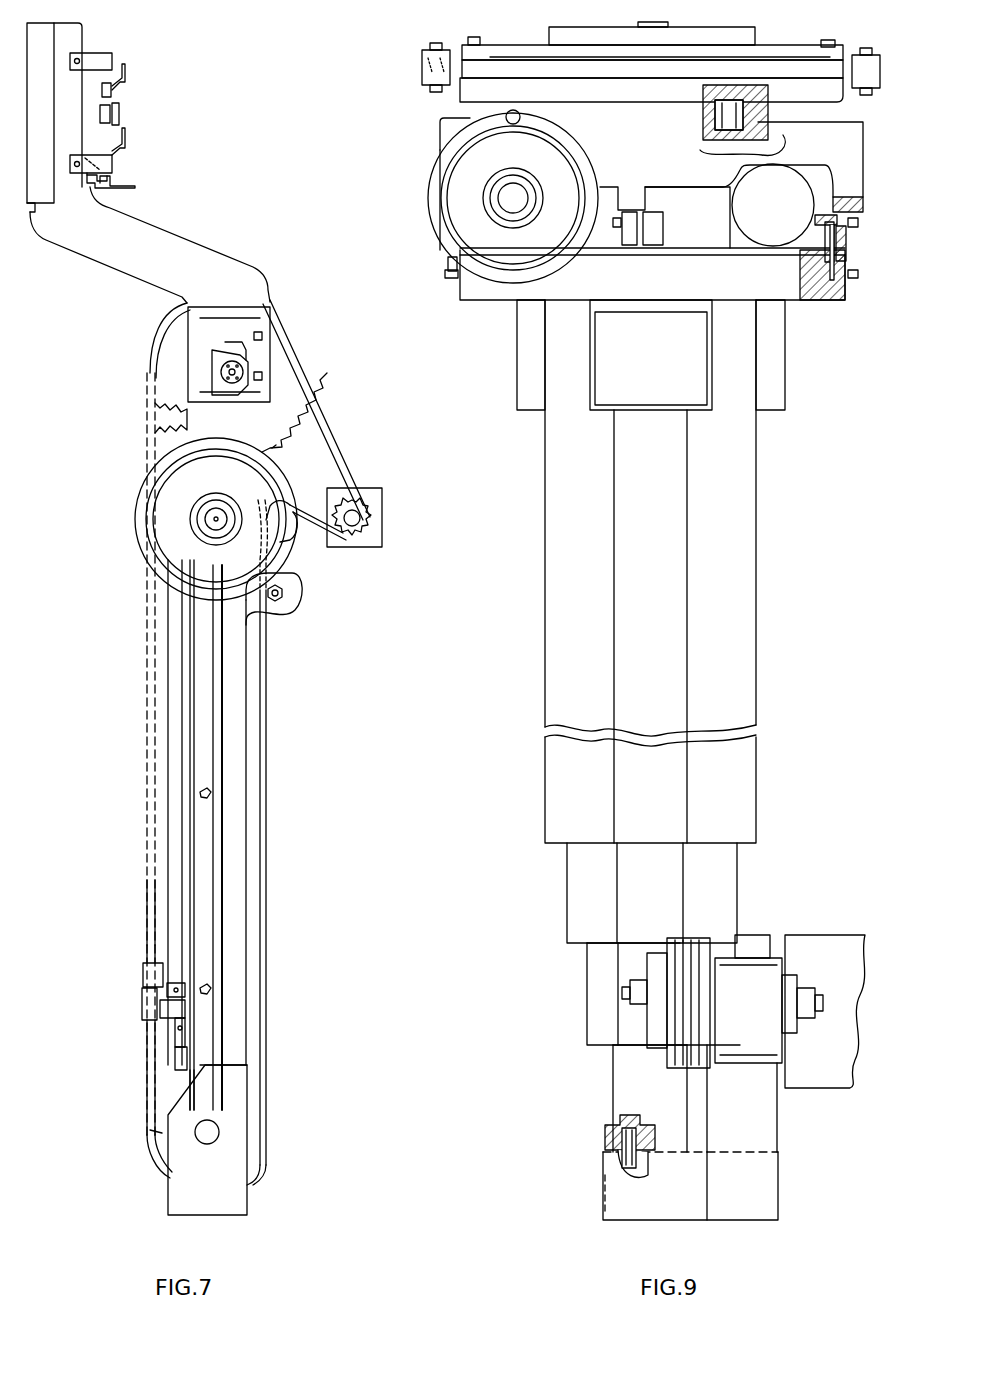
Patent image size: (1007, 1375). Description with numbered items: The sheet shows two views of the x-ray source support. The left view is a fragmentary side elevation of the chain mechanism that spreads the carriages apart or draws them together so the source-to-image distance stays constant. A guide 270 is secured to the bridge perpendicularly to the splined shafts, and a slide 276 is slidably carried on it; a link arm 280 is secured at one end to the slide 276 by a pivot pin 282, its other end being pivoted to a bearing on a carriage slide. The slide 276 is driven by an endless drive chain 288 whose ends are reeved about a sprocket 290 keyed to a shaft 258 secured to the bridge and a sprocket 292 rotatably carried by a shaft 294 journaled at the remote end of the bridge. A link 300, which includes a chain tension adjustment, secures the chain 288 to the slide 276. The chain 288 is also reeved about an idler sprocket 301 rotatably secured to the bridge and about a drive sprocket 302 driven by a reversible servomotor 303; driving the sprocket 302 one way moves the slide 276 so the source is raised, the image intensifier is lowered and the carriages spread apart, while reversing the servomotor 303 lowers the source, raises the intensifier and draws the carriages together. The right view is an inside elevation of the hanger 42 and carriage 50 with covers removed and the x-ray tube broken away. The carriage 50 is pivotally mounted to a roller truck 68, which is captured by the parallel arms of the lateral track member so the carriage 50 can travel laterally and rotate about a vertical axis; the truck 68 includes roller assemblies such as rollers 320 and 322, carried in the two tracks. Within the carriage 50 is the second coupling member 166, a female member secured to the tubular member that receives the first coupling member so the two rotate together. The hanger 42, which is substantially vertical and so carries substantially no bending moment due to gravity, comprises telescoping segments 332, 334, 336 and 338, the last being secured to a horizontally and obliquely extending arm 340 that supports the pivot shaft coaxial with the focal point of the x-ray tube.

In FIG. 9, the hanger 42 is at (725, 612).
In FIG. 9, the carriage 50 is at (450, 128).
In FIG. 9, the roller truck 68 is at (512, 50).
In FIG. 9, the second coupling member 166 is at (437, 212).
In FIG. 7, the shaft 258 is at (240, 372).
In FIG. 7, the guide 270 is at (190, 878).
In FIG. 7, the slide 276 is at (167, 990).
In FIG. 7, the link arm 280 is at (183, 793).
In FIG. 7, the pivot pin 282 is at (170, 1022).
In FIG. 7, the endless drive chain 288 is at (147, 418).
In FIG. 7, the sprocket 290 is at (173, 348).
In FIG. 7, the sprocket 292 is at (162, 1133).
In FIG. 7, the shaft 294 is at (203, 1137).
In FIG. 7, the link 300 is at (147, 1007).
In FIG. 7, the idler sprocket 301 is at (297, 503).
In FIG. 7, the drive sprocket 302 is at (352, 535).
In FIG. 7, the reversible servomotor 303 is at (377, 537).
In FIG. 9, the roller assembly 320 is at (423, 63).
In FIG. 9, the roller assembly 322 is at (872, 72).
In FIG. 9, the telescoping segment 332 is at (552, 572).
In FIG. 9, the telescoping segment 334 is at (583, 892).
In FIG. 9, the telescoping segment 336 is at (595, 1015).
In FIG. 9, the telescoping segment 338 is at (618, 1085).
In FIG. 9, the arm 340 is at (757, 1187).